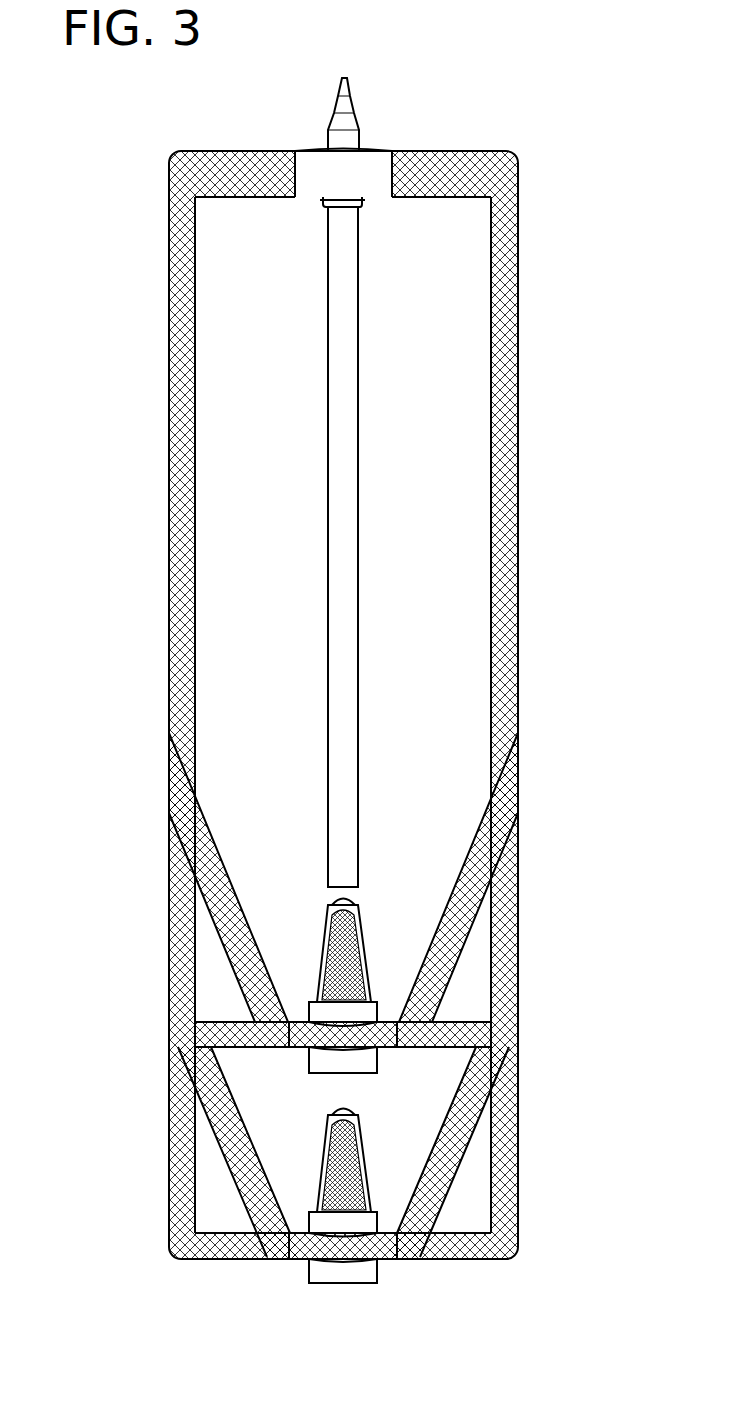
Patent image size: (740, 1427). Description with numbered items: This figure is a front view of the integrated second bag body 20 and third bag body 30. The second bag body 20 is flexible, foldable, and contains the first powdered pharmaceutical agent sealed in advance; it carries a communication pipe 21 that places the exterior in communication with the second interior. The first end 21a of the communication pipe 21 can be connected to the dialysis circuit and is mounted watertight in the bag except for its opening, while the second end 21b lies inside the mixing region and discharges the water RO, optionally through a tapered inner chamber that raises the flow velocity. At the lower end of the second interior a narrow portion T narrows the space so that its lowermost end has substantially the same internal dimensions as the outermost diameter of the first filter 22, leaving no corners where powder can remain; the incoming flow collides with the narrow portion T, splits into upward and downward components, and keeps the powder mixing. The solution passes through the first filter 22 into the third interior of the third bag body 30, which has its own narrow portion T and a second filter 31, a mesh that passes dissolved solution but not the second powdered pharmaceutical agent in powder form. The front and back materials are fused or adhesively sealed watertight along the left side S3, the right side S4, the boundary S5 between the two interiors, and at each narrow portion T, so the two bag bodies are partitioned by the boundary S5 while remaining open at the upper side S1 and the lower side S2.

The second bag body 20 is at (517, 518).
The communication pipe 21 is at (350, 447).
The first end 21a is at (345, 79).
The second end 21b is at (345, 889).
The first filter 22 is at (345, 978).
The third bag body 30 is at (517, 1150).
The second filter 31 is at (350, 1185).
The narrow portion T is at (246, 932).
The upper side S1 is at (452, 165).
The lower side S2 is at (472, 1258).
The left side S3 is at (186, 578).
The right side S4 is at (505, 648).
The boundary S5 is at (463, 1027).